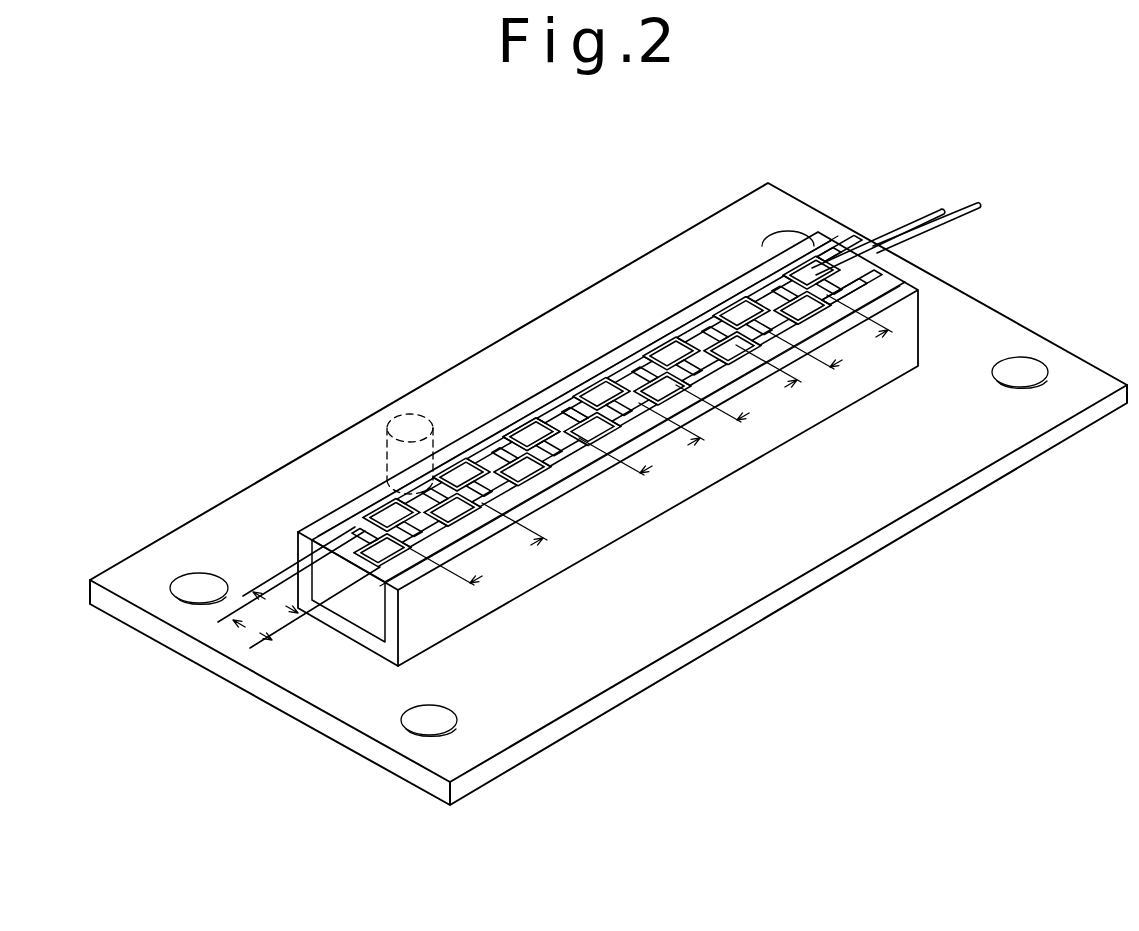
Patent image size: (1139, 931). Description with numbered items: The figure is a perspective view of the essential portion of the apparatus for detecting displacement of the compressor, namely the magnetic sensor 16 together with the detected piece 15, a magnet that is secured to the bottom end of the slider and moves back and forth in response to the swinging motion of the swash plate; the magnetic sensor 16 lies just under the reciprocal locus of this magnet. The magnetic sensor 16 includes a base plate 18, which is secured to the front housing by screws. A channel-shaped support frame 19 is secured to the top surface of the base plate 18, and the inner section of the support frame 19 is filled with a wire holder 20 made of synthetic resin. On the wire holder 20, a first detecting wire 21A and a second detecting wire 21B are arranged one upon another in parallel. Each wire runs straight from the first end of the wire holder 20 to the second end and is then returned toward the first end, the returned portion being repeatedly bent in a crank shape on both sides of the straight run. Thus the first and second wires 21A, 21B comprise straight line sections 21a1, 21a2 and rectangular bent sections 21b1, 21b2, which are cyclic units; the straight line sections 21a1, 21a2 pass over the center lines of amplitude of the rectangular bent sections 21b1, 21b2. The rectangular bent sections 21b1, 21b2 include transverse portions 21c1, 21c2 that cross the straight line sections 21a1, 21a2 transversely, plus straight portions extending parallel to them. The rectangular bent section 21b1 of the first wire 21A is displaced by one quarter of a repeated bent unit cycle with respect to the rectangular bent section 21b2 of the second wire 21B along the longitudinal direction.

The detected piece 15 is at (410, 414).
The magnetic sensor 16 is at (655, 193).
The base plate 18 is at (750, 628).
The support frame 19 is at (677, 490).
The wire holder 20 is at (367, 613).
The first detecting wire 21A is at (370, 513).
The second detecting wire 21B is at (365, 547).
The straight line section 21a1 is at (497, 462).
The straight line section 21a2 is at (570, 463).
The rectangular bent section 21b1 is at (617, 465).
The rectangular bent section 21b2 is at (747, 387).
The transverse portion 21c1 is at (258, 593).
The transverse portion 21c2 is at (272, 637).